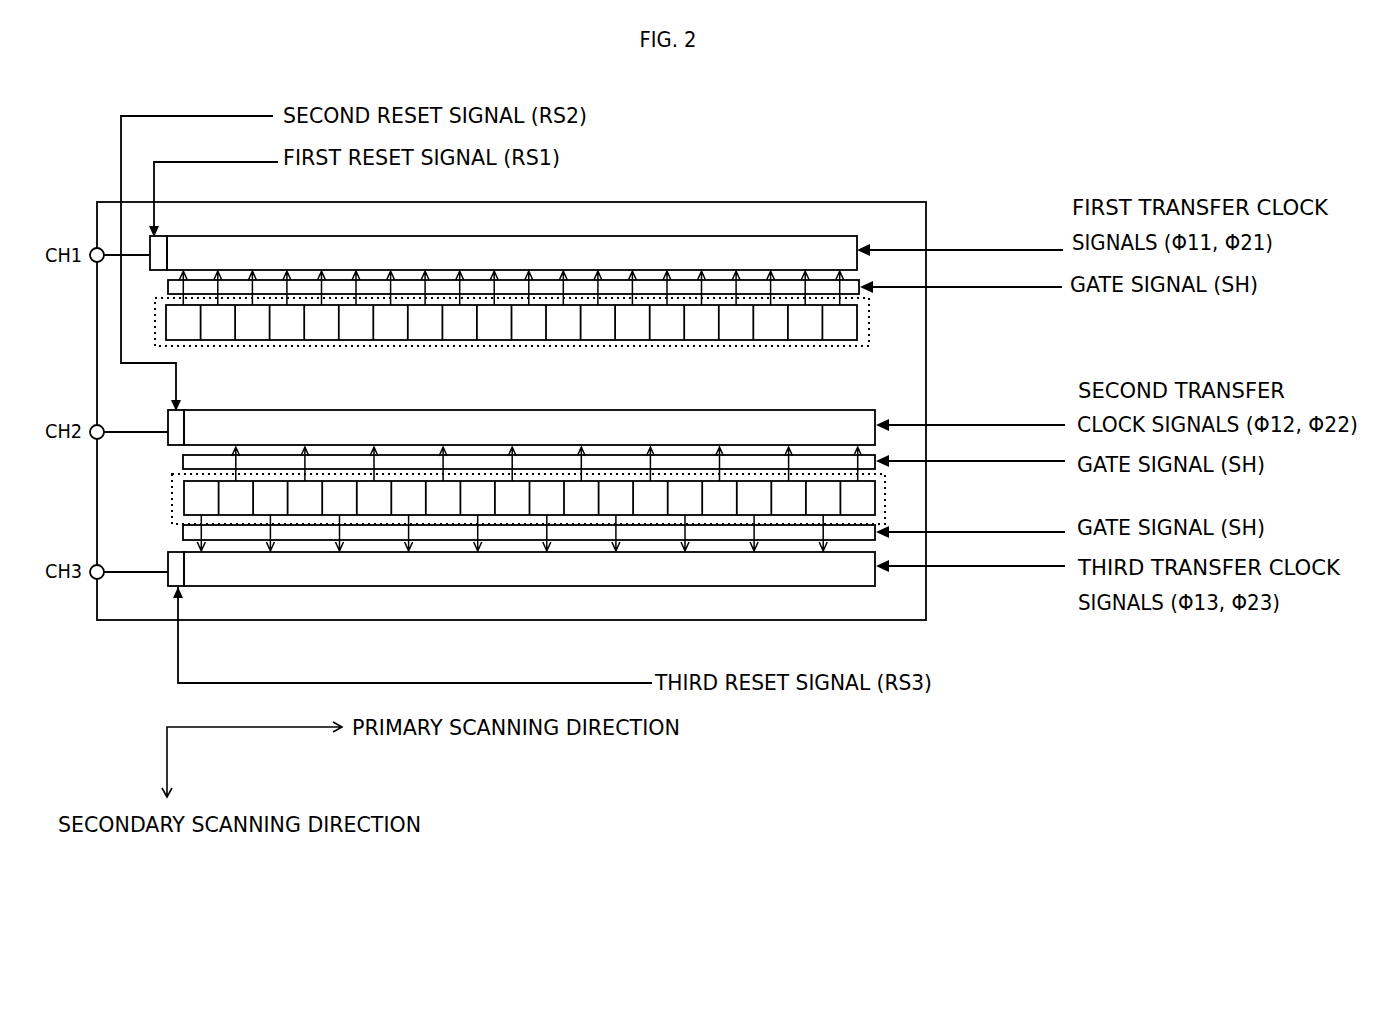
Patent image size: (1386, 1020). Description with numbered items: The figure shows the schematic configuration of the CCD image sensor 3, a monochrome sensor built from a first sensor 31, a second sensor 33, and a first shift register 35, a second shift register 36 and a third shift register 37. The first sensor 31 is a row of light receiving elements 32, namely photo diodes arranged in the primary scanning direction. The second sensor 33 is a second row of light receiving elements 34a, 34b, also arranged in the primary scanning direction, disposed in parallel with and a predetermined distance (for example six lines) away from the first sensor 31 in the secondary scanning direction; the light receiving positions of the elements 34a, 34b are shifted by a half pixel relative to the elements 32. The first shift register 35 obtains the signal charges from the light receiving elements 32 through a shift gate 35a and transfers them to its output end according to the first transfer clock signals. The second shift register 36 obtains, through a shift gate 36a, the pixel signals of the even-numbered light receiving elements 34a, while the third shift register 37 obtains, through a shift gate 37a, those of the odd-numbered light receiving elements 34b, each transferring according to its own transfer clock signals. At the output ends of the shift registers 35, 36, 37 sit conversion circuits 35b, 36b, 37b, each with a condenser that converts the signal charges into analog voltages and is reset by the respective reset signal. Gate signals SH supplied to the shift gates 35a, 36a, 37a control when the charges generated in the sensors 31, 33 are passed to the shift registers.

The CCD image sensor 3 is at (511, 411).
The first sensor 31 is at (869, 325).
The light receiving elements 32 is at (353, 336).
The second sensor 33 is at (885, 480).
The light receiving elements 34a is at (243, 510).
The light receiving elements 34b is at (350, 510).
The first shift register 35 is at (272, 235).
The shift gate 35a is at (860, 293).
The conversion circuit 35b is at (159, 248).
The second shift register 36 is at (310, 410).
The shift gate 36a is at (812, 462).
The conversion circuit 36b is at (175, 420).
The third shift register 37 is at (758, 586).
The shift gate 37a is at (840, 533).
The conversion circuit 37b is at (178, 558).